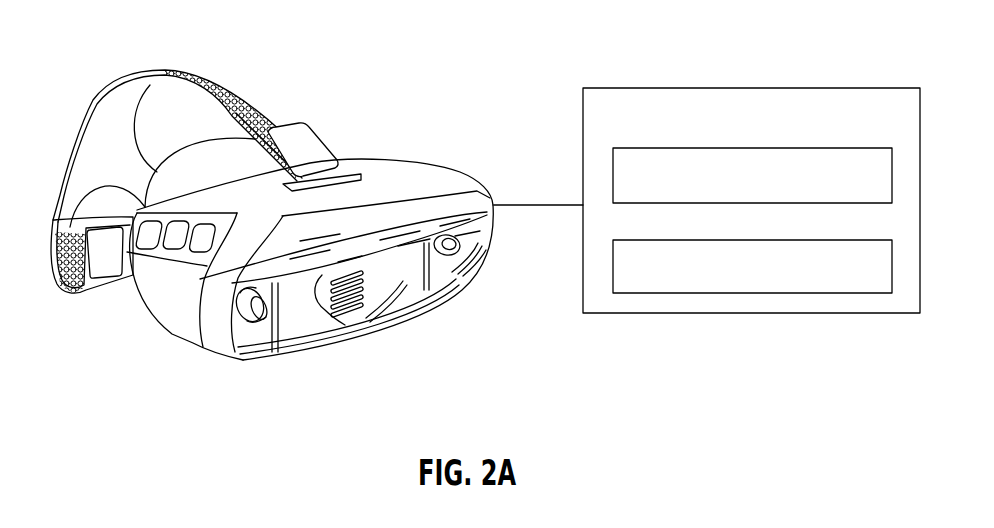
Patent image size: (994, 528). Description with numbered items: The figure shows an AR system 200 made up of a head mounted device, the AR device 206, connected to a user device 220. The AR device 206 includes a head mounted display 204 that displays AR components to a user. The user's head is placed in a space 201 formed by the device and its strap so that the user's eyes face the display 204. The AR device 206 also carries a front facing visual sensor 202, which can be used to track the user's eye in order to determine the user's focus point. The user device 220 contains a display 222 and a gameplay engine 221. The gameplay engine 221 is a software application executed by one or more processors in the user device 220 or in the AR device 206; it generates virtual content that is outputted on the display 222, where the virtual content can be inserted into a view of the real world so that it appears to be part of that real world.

The AR system 200 is at (426, 62).
The space 201 is at (243, 85).
The front facing visual sensor 202 is at (235, 352).
The head mounted display 204 is at (349, 320).
The AR device 206 is at (407, 172).
The user device 220 is at (752, 88).
The gameplay engine 221 is at (847, 148).
The display 222 is at (847, 240).